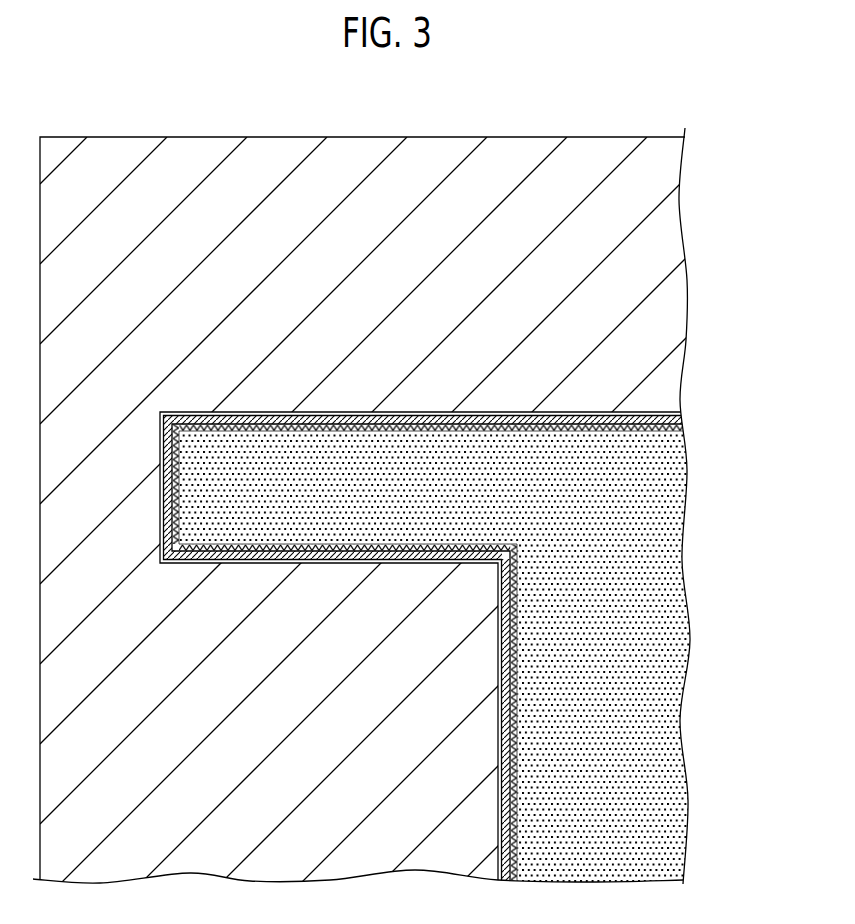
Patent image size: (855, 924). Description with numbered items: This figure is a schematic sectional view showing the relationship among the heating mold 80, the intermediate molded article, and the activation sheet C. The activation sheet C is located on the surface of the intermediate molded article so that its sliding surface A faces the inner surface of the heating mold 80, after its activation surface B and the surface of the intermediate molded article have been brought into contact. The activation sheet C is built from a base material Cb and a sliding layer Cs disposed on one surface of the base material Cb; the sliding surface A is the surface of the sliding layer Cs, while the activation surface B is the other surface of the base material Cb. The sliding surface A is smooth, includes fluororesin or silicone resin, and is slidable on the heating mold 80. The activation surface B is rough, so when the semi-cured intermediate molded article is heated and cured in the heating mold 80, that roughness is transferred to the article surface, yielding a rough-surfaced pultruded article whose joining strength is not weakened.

The heating mold 80 is at (440, 161).
The sliding surface A is at (432, 412).
The sliding layer Cs is at (515, 412).
The base material Cb is at (593, 412).
The activation sheet C is at (466, 594).
The activation surface B is at (612, 432).